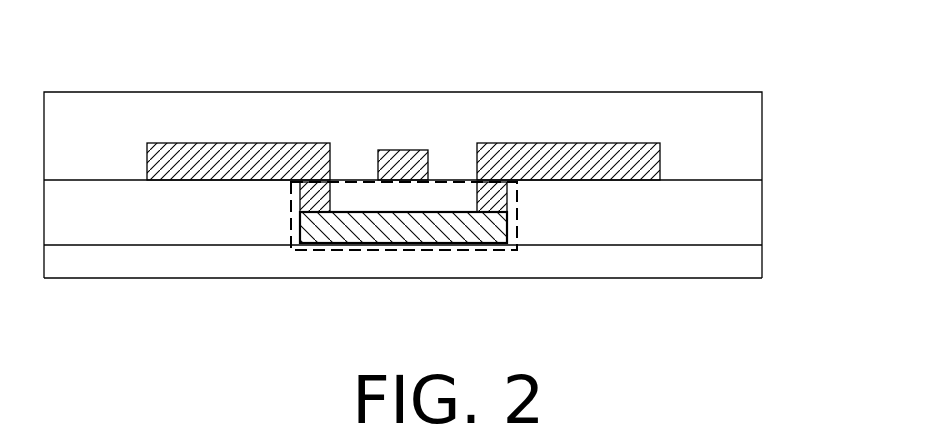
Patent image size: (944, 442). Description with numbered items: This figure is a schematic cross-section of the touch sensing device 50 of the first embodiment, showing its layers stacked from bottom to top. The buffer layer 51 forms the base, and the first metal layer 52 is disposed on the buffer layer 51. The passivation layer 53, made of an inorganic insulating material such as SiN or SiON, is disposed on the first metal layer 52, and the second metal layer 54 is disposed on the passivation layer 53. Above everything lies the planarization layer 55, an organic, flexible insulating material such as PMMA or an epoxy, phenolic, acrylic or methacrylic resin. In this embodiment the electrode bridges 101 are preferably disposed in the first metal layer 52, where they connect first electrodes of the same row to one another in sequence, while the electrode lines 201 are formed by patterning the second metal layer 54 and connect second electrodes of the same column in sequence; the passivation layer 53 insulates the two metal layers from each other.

The touch sensing device 50 is at (113, 74).
The buffer layer 51 is at (735, 265).
The first metal layer 52 is at (447, 247).
The passivation layer 53 is at (732, 222).
The second metal layer 54 is at (593, 160).
The planarization layer 55 is at (728, 148).
The electrode bridge 101 is at (340, 248).
The electrode line 201 is at (405, 165).